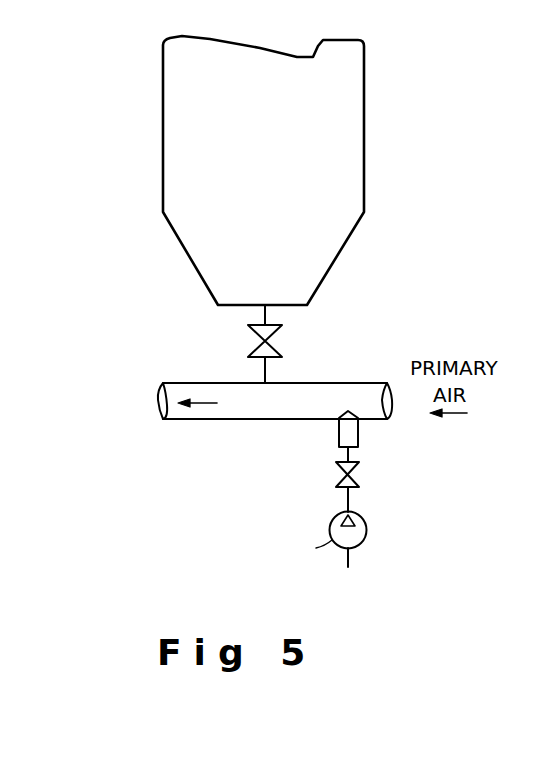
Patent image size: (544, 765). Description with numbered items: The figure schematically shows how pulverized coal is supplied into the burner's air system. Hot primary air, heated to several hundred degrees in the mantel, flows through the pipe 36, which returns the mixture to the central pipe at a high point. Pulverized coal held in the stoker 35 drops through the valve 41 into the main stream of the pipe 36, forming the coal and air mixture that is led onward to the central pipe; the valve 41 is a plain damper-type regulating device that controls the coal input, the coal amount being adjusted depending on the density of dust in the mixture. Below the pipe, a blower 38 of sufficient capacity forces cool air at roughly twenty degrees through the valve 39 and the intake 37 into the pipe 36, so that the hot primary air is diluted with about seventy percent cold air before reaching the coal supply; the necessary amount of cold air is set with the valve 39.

The stoker 35 is at (352, 137).
The valve 41 is at (285, 331).
The pipe 36 is at (190, 422).
The intake 37 is at (359, 432).
The valve 39 is at (361, 479).
The blower 38 is at (365, 545).